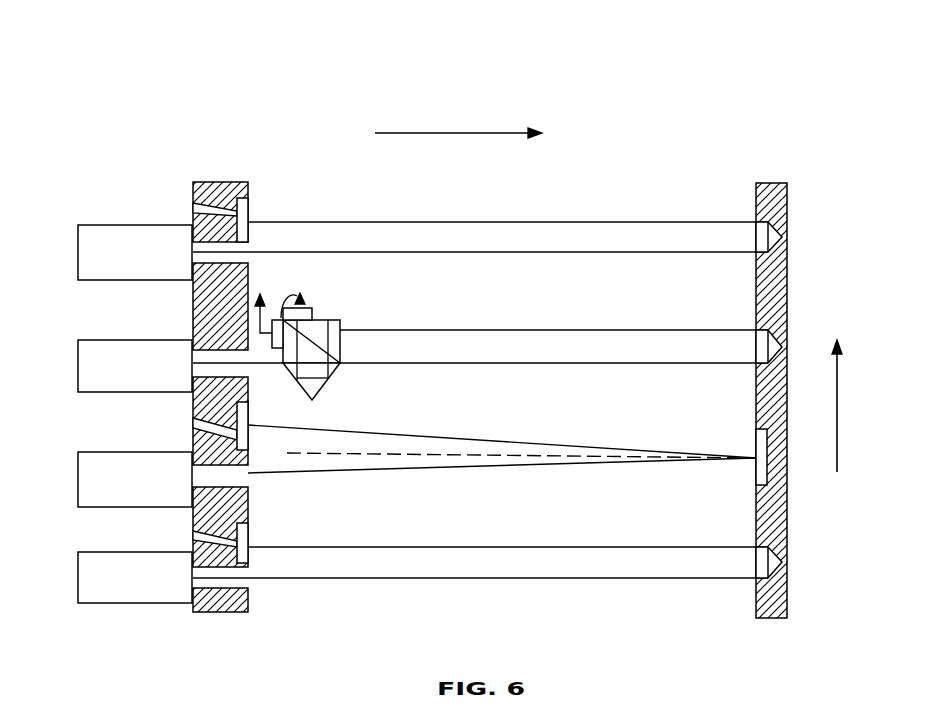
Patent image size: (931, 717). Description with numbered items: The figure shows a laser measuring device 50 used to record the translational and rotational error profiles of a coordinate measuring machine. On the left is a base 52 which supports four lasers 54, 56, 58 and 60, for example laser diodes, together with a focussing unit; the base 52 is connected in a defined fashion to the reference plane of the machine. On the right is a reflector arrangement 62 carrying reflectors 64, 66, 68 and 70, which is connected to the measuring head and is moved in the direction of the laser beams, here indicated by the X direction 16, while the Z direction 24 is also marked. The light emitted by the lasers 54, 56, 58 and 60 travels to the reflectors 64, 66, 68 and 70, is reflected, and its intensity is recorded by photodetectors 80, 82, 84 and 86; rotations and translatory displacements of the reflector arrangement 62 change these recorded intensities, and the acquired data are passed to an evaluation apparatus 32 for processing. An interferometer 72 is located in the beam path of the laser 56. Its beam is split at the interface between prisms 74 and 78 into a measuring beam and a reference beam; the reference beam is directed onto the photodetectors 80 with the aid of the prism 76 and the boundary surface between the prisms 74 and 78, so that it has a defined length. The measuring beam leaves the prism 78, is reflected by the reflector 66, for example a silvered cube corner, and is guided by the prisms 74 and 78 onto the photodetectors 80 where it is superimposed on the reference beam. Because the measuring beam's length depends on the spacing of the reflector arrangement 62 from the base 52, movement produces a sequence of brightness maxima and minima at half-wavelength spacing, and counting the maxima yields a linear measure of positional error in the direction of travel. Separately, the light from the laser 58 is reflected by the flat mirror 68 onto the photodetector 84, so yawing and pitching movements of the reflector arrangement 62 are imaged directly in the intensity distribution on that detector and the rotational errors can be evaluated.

The X direction 16 is at (442, 133).
The Z direction 24 is at (837, 410).
The evaluation apparatus 32 is at (237, 211).
The laser measuring device 50 is at (647, 145).
The base 52 is at (220, 182).
The laser 54 is at (78, 252).
The laser 56 is at (78, 365).
The laser 58 is at (78, 478).
The laser 60 is at (78, 570).
The reflector arrangement 62 is at (768, 183).
The reflector 64 is at (757, 233).
The reflector 66 is at (757, 343).
The flat mirror 68 is at (757, 468).
The reflector 70 is at (757, 562).
The interferometer 72 is at (352, 320).
The prism 74 is at (279, 350).
The prism 76 is at (328, 380).
The prism 78 is at (340, 342).
The photodetectors 80 is at (306, 308).
The photodetector 82 is at (248, 206).
The photodetector 84 is at (250, 432).
The photodetector 86 is at (248, 540).